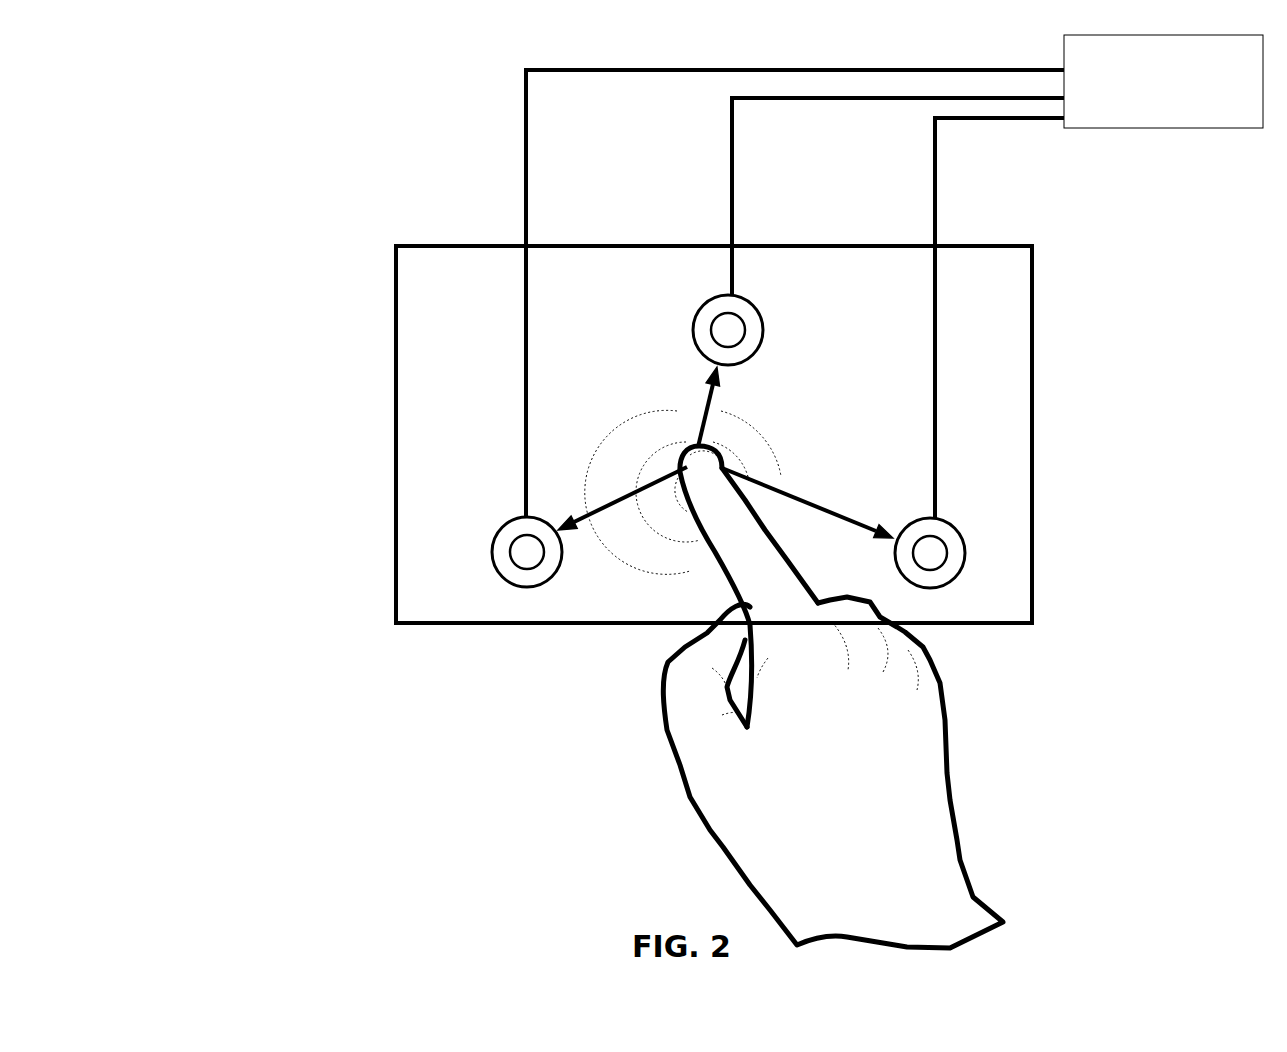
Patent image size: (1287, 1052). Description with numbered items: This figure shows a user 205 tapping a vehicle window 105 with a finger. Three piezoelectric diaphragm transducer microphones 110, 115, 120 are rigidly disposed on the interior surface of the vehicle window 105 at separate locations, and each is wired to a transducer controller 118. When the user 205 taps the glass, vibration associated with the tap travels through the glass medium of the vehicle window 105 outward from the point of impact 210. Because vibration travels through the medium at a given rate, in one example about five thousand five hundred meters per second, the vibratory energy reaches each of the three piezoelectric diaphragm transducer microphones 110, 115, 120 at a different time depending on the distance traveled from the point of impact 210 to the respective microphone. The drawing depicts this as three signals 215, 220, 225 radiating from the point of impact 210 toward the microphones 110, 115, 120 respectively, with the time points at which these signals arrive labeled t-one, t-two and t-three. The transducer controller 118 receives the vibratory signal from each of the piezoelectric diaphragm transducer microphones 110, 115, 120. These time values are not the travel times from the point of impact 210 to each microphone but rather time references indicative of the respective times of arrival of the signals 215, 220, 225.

The vehicle window 105 is at (976, 371).
The piezoelectric diaphragm transducer microphone 110 is at (512, 583).
The piezoelectric diaphragm transducer microphone 115 is at (705, 312).
The transducer controller 118 is at (1163, 81).
The piezoelectric diaphragm transducer microphone 120 is at (967, 550).
The user 205 is at (955, 782).
The point of impact 210 is at (678, 450).
The signal 215 is at (627, 498).
The signal 220 is at (703, 408).
The signal 225 is at (807, 493).